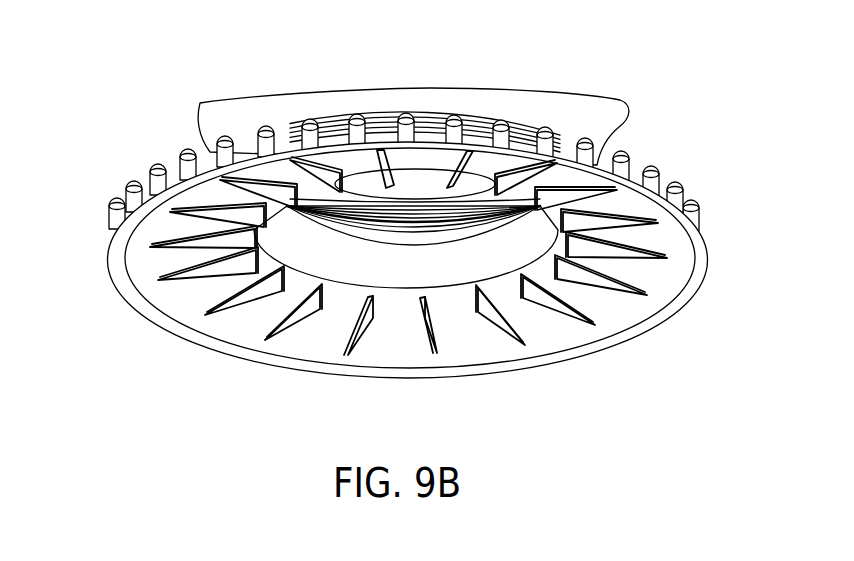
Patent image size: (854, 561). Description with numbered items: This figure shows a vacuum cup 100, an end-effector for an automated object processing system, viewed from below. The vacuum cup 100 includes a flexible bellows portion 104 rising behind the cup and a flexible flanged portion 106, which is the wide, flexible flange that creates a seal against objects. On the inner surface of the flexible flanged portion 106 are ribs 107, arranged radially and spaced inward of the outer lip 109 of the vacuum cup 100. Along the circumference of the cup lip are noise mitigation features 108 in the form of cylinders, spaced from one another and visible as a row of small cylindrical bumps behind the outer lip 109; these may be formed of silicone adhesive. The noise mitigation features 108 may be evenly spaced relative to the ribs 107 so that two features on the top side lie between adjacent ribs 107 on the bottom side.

The vacuum cup 100 is at (98, 100).
The flexible bellows portion 104 is at (612, 125).
The flexible flanged portion 106 is at (682, 257).
The ribs 107 is at (250, 292).
The noise mitigation features 108 is at (147, 177).
The outer lip 109 is at (680, 308).